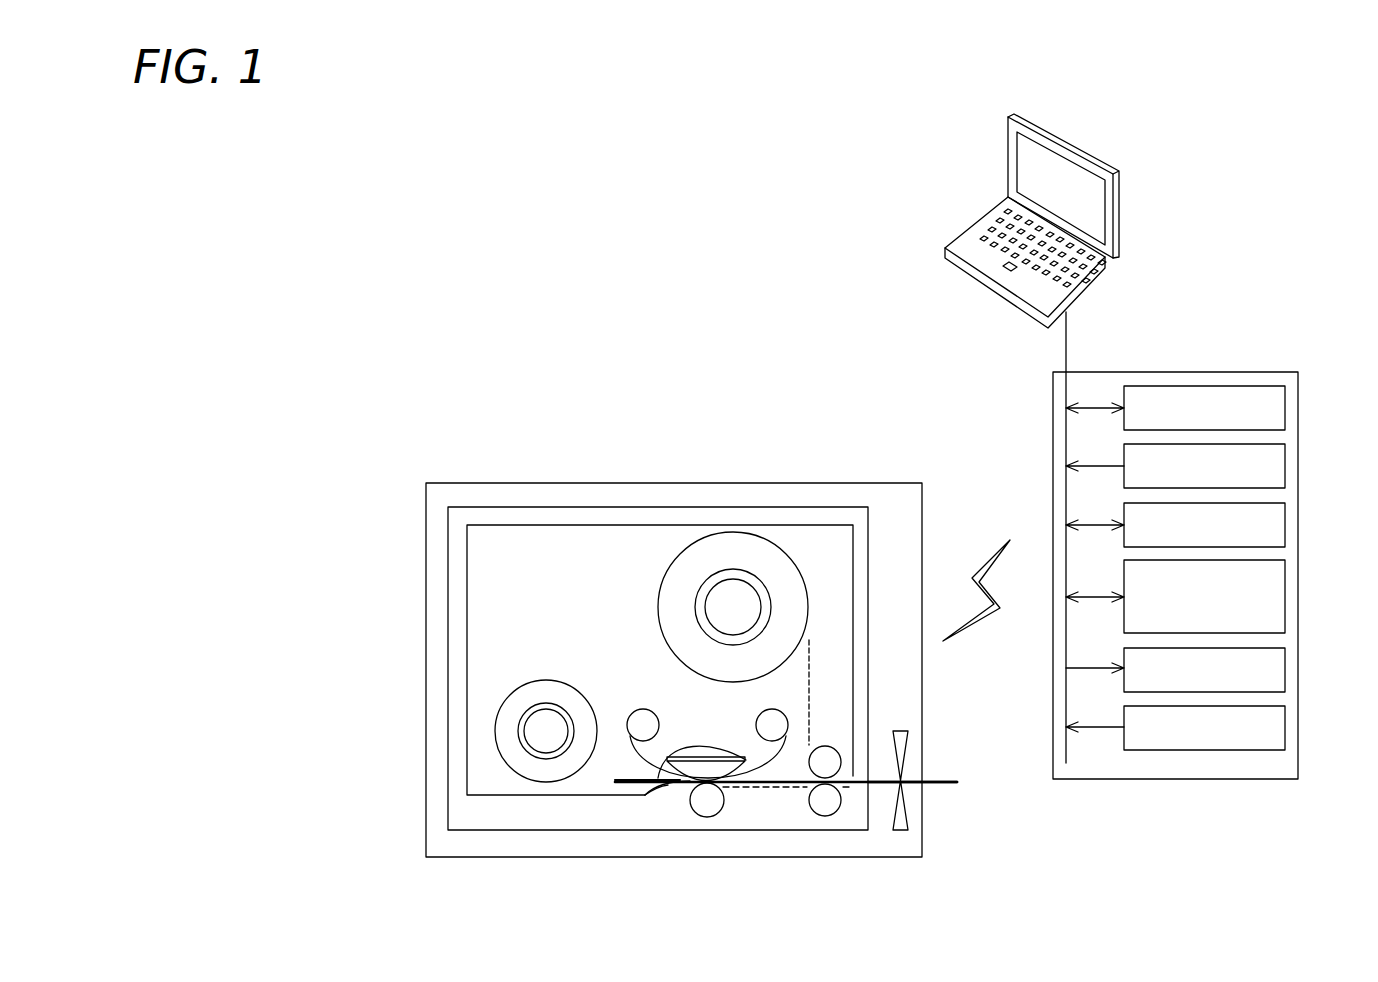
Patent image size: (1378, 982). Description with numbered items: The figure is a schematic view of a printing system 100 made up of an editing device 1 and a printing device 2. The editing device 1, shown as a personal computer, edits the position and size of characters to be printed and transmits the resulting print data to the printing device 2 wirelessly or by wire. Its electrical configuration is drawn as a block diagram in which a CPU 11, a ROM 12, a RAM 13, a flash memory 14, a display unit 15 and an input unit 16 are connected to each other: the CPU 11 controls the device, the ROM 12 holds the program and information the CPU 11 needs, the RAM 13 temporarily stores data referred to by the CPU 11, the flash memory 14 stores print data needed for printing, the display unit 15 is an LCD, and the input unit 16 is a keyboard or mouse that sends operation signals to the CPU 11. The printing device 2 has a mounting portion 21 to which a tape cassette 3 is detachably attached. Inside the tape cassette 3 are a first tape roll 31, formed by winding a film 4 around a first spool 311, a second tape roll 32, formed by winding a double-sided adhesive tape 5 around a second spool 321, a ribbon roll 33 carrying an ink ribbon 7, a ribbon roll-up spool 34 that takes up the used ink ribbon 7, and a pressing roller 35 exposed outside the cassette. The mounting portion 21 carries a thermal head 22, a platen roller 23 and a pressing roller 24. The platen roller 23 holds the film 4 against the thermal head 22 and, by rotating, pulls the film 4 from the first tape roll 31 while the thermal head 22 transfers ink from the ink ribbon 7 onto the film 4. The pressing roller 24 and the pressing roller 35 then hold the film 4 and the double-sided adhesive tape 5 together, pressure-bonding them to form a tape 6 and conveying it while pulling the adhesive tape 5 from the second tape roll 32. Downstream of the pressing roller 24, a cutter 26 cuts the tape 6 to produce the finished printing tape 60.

The printing system 100 is at (742, 188).
The editing device 1 is at (1085, 134).
The printing device 2 is at (716, 438).
The tape cassette 3 is at (808, 516).
The film 4 is at (620, 783).
The double-sided adhesive tape 5 is at (810, 694).
The tape 6 is at (873, 784).
The ink ribbon 7 is at (763, 760).
The CPU 11 is at (1285, 405).
The ROM 12 is at (1285, 464).
The RAM 13 is at (1285, 522).
The flash memory 14 is at (1285, 595).
The display unit 15 is at (1060, 175).
The input unit 16 is at (1000, 207).
The mounting portion 21 is at (628, 506).
The thermal head 22 is at (647, 796).
The platen roller 23 is at (707, 817).
The pressing roller 24 is at (825, 817).
The cutter 26 is at (923, 819).
The first tape roll 31 is at (549, 668).
The first spool 311 is at (573, 701).
The second tape roll 32 is at (667, 570).
The second spool 321 is at (697, 610).
The ribbon roll 33 is at (656, 715).
The ribbon roll-up spool 34 is at (758, 717).
The pressing roller 35 is at (822, 746).
The printing tape 60 is at (942, 780).